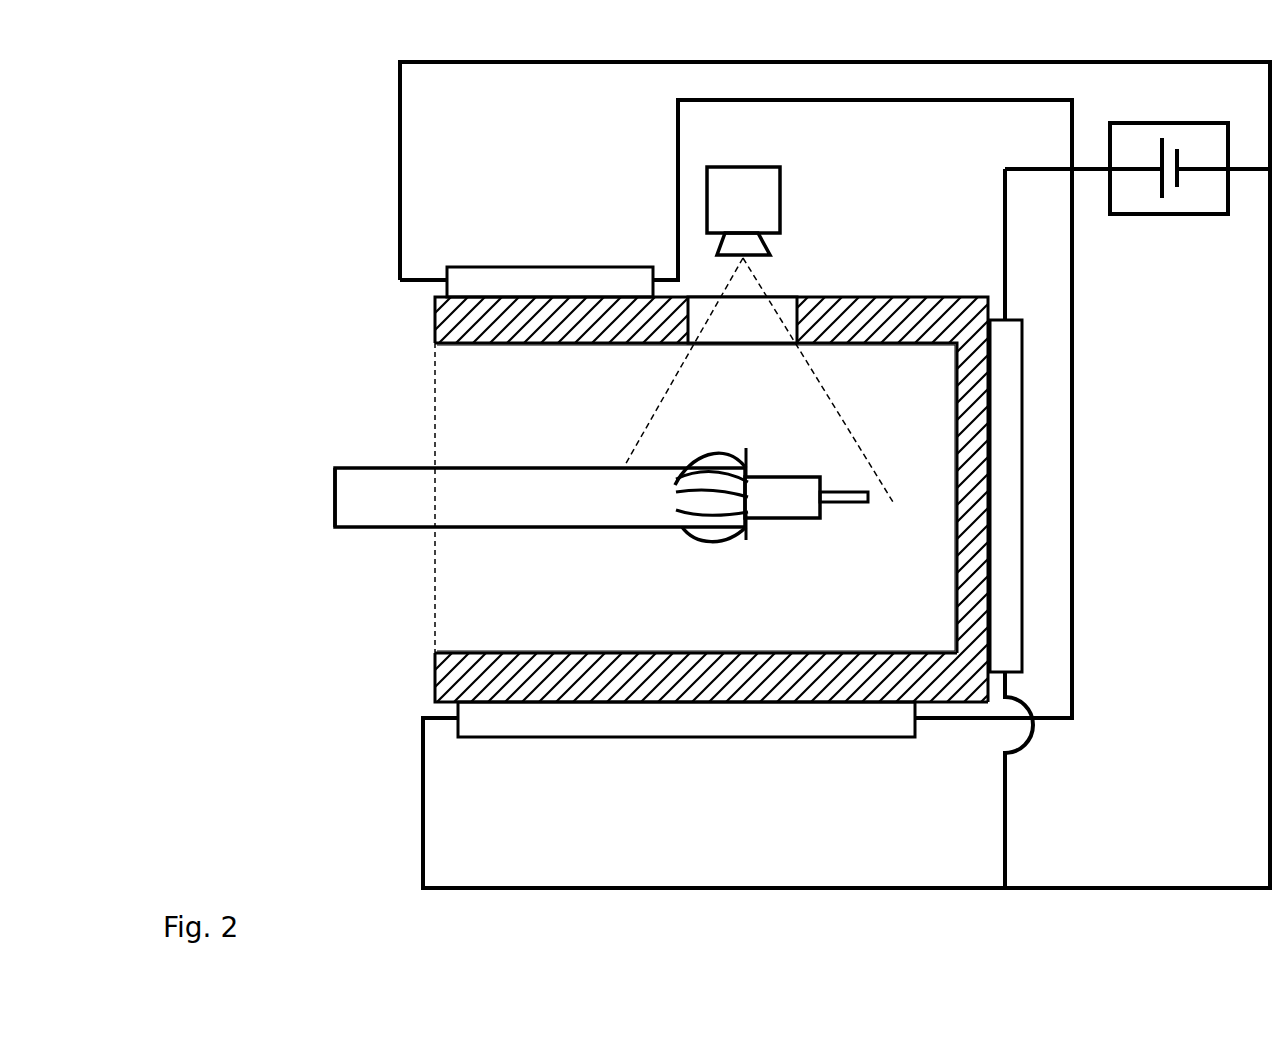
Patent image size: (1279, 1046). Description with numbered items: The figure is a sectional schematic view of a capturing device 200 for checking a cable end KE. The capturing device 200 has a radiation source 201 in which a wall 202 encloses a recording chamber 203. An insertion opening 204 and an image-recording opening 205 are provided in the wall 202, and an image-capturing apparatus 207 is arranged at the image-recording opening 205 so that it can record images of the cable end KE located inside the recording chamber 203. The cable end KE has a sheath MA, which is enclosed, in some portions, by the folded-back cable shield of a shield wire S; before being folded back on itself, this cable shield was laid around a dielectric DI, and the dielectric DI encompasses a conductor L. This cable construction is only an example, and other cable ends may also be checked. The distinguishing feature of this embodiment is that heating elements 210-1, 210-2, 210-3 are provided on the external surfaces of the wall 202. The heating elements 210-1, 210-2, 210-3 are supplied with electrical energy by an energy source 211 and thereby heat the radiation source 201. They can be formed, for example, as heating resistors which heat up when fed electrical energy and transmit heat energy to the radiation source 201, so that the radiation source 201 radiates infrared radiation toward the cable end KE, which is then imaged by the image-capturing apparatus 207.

The capturing device 200 is at (348, 814).
The radiation source 201 is at (435, 683).
The wall 202 is at (435, 332).
The recording chamber 203 is at (479, 396).
The insertion opening 204 is at (431, 608).
The image-recording opening 205 is at (788, 299).
The image-capturing apparatus 207 is at (780, 180).
The heating element 210-1 is at (534, 267).
The heating element 210-2 is at (743, 737).
The heating element 210-3 is at (1022, 485).
The energy source 211 is at (1195, 214).
The cable end KE is at (335, 500).
The sheath MA is at (532, 527).
The shield wire S is at (697, 530).
The dielectric DI is at (797, 518).
The conductor L is at (870, 502).